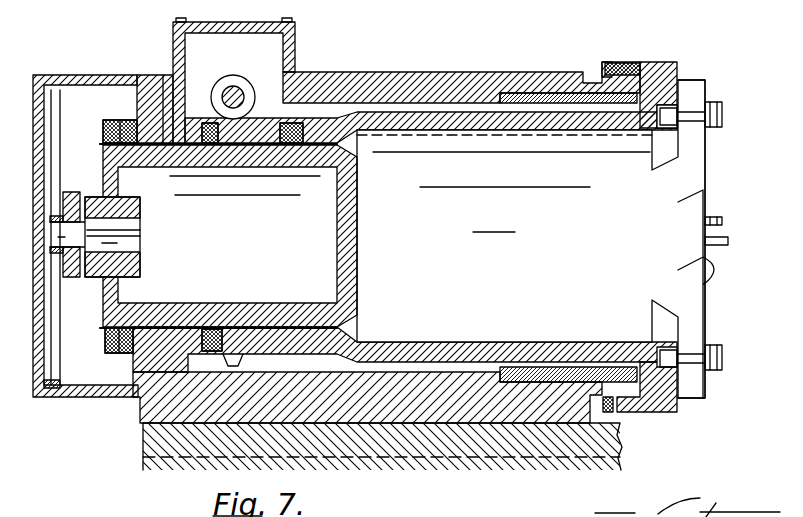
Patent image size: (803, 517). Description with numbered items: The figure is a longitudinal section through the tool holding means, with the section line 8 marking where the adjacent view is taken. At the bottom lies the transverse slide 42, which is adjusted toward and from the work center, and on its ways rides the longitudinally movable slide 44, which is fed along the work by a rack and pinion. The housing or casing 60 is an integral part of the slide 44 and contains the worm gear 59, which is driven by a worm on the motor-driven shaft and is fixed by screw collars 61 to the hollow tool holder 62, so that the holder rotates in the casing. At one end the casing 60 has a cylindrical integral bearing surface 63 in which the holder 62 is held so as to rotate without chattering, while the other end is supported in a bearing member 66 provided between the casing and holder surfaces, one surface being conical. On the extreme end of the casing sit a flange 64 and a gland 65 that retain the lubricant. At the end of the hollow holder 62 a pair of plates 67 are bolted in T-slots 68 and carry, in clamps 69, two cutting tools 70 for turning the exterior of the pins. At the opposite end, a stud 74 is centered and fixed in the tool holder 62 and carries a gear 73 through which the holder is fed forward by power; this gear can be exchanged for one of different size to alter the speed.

The section line 8- 8 is at (63, 52).
The transverse slide 42 is at (143, 467).
The longitudinally movable slide 44 is at (155, 411).
The worm gear 59 is at (256, 77).
The housing or casing 60 is at (392, 82).
The screw collars 61 is at (308, 143).
The hollow tool holder 62 is at (418, 238).
The cylindrical integral bearing surface 63 is at (162, 137).
The flange 64 is at (653, 67).
The gland 65 is at (608, 72).
The bearing member 66 is at (545, 93).
The plates 67 is at (695, 157).
The T-slots 68 is at (660, 113).
The clamps 69 is at (722, 226).
The cutting tools 70 is at (728, 240).
The gear 73 is at (77, 268).
The stud 74 is at (125, 222).